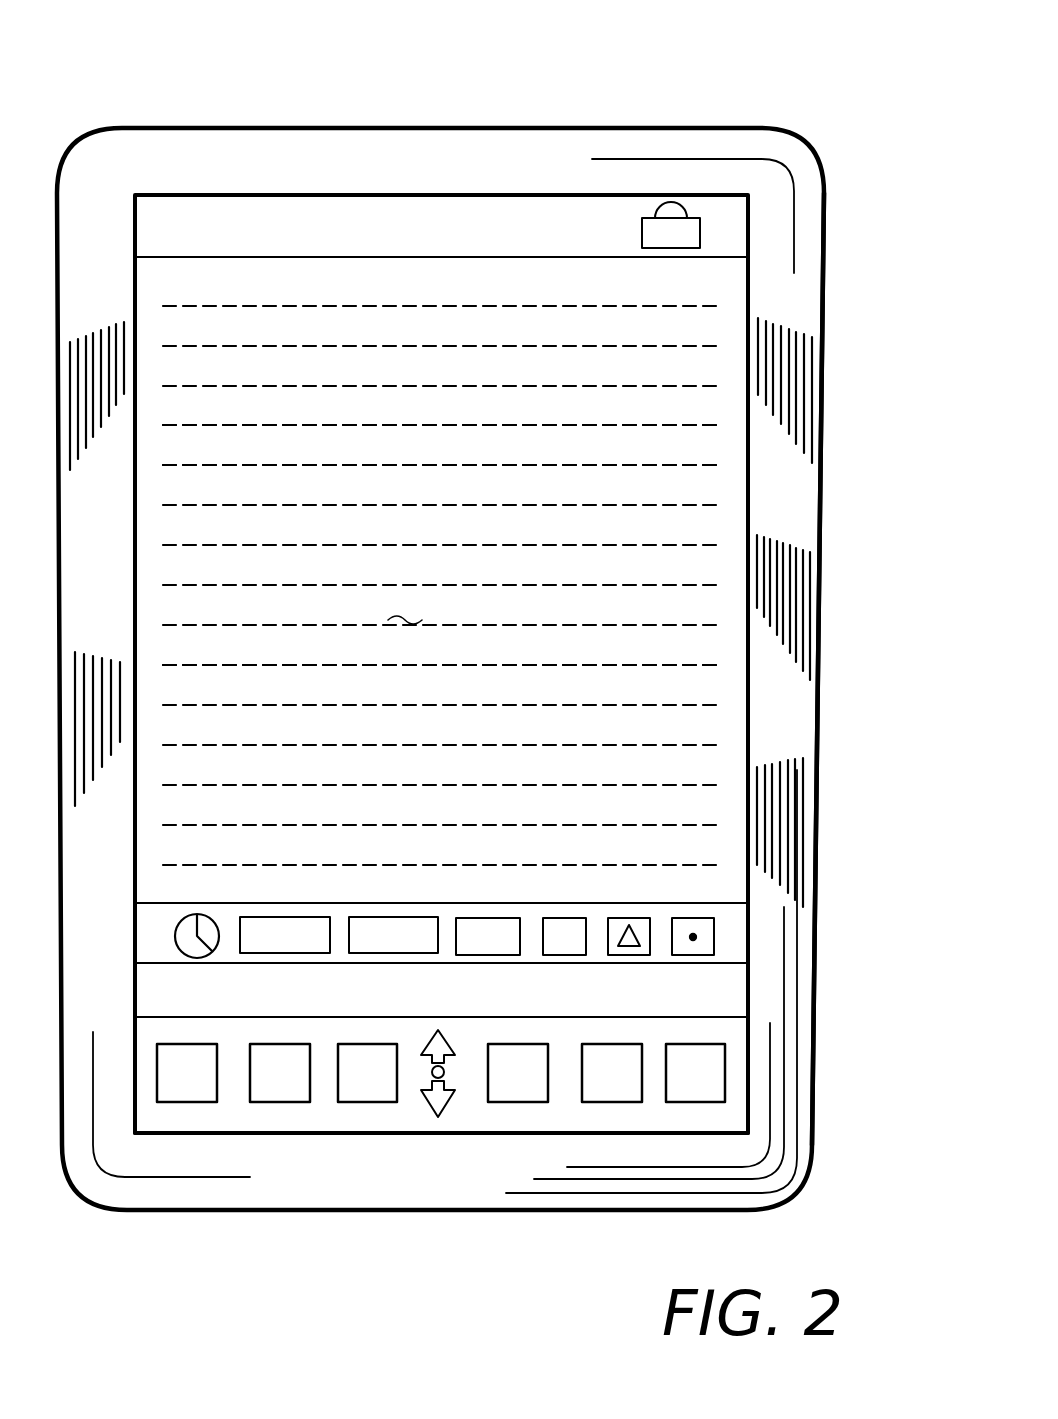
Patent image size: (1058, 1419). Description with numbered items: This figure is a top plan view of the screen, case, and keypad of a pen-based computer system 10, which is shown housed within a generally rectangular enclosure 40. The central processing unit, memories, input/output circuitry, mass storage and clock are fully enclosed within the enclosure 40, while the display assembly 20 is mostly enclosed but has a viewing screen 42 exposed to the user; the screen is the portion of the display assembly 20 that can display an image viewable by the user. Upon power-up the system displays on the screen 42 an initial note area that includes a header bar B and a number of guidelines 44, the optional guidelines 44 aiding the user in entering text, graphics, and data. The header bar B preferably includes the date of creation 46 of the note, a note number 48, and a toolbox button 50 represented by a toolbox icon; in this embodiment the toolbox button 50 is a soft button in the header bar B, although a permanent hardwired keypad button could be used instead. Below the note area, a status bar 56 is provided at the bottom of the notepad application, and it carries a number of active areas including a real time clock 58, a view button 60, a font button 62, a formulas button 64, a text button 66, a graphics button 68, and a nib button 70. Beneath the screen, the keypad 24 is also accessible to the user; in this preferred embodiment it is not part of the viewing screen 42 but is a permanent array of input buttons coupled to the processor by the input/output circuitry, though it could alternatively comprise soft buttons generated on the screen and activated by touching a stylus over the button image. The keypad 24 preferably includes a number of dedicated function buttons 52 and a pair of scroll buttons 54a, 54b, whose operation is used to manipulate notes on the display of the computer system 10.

The pen-based computer system 10 is at (767, 83).
The display assembly 20 is at (652, 565).
The keypad 24 is at (722, 1128).
The enclosure 40 is at (772, 508).
The viewing screen 42 is at (665, 683).
The guidelines 44 is at (685, 465).
The date of creation 46 is at (228, 205).
The note number 48 is at (498, 222).
The toolbox button 50 is at (680, 212).
The dedicated function buttons 52 is at (280, 1072).
The scroll button 54a is at (423, 1048).
The scroll button 54b is at (450, 1100).
The status bar 56 is at (747, 945).
The real time clock 58 is at (208, 922).
The view button 60 is at (288, 918).
The font button 62 is at (380, 918).
The formulas button 64 is at (484, 920).
The text button 66 is at (556, 920).
The graphics button 68 is at (622, 920).
The nib button 70 is at (680, 920).
The header bar B is at (380, 227).